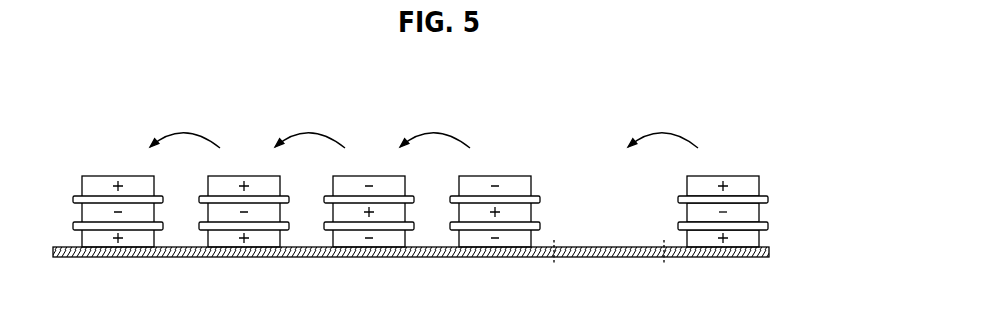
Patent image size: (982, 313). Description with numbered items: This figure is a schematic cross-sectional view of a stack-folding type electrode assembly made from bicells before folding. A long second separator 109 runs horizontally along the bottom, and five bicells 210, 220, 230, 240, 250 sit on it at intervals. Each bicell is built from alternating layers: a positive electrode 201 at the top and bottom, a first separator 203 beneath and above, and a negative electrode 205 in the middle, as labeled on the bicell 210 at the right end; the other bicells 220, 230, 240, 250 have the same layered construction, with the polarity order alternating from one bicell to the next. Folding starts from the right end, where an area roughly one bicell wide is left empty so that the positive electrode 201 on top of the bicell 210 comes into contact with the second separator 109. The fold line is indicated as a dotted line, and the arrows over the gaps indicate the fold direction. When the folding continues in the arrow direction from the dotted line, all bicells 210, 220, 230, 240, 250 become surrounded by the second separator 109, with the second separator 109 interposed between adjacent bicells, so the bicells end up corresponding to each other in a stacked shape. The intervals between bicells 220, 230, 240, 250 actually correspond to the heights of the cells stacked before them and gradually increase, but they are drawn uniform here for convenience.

The second separator 109 is at (748, 258).
The positive electrode 201 is at (754, 185).
The first separator 203 is at (766, 199).
The negative electrode 205 is at (755, 213).
The bicell 210 is at (722, 209).
The bicell 220 is at (498, 153).
The bicell 230 is at (372, 153).
The bicell 240 is at (247, 153).
The bicell 250 is at (121, 153).